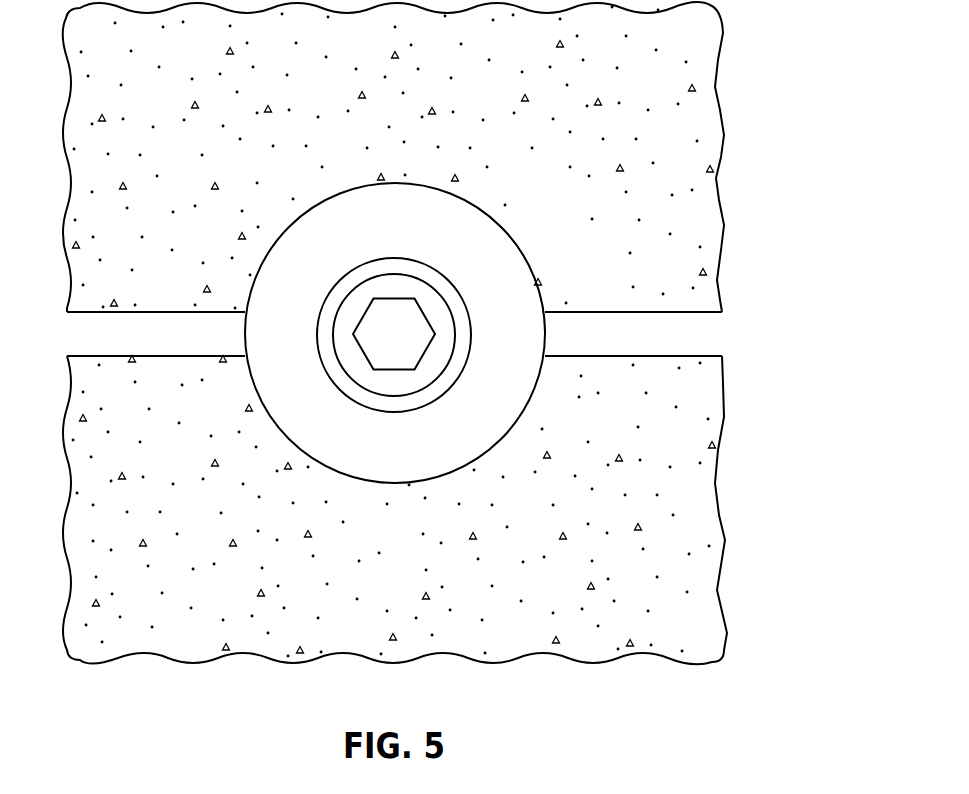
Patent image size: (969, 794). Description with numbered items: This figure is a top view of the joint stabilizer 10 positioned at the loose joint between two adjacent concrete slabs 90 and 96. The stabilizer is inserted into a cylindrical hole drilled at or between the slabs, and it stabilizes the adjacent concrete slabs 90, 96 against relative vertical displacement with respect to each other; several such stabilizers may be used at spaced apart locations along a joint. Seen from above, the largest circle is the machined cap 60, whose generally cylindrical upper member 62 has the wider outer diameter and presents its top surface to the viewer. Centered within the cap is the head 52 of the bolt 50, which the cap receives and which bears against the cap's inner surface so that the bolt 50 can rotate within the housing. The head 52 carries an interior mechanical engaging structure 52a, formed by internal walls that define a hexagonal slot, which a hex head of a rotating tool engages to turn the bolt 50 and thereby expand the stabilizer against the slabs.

The joint stabilizer 10 is at (432, 318).
The bolt 50 is at (395, 283).
The head 52 is at (412, 287).
The mechanical engaging structure 52a is at (410, 352).
The machined cap 60 is at (497, 265).
The upper member 62 is at (542, 300).
The concrete slab 90 is at (680, 417).
The concrete slab 96 is at (680, 215).